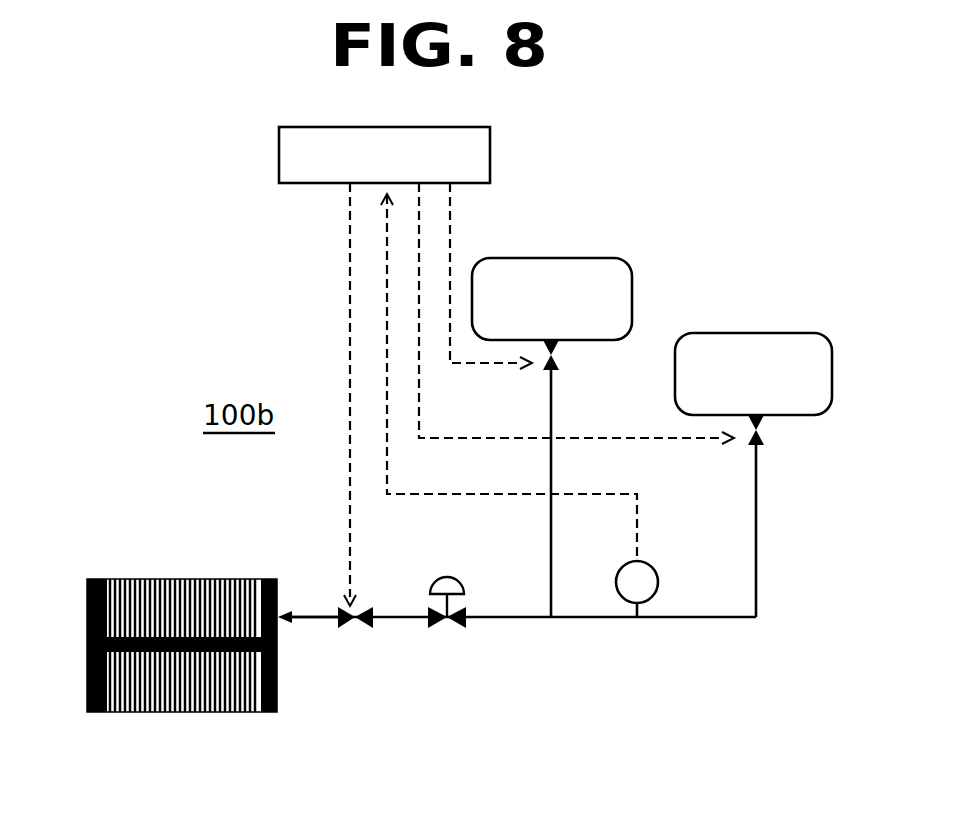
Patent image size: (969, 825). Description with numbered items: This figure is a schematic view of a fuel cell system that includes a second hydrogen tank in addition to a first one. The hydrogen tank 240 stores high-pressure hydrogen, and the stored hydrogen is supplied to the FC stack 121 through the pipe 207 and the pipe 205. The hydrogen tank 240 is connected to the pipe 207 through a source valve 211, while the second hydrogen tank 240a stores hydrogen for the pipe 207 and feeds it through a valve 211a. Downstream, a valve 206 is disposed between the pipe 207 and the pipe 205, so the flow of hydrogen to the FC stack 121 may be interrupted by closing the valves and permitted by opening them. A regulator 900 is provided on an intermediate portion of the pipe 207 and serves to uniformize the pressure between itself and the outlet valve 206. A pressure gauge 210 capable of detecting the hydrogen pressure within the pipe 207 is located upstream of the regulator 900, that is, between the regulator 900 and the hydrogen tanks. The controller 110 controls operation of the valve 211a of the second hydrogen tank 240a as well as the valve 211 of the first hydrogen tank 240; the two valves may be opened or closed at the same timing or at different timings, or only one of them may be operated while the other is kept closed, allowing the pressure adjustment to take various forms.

The controller 110 is at (490, 153).
The FC stack 121 is at (140, 712).
The pipe 205 is at (323, 620).
The valve 206 is at (360, 611).
The pipe 207 is at (580, 617).
The pressure gauge 210 is at (684, 577).
The source valve 211 is at (763, 436).
The valve 211a is at (557, 364).
The hydrogen tank 240 is at (750, 333).
The second hydrogen tank 240a is at (545, 258).
The regulator 900 is at (447, 577).